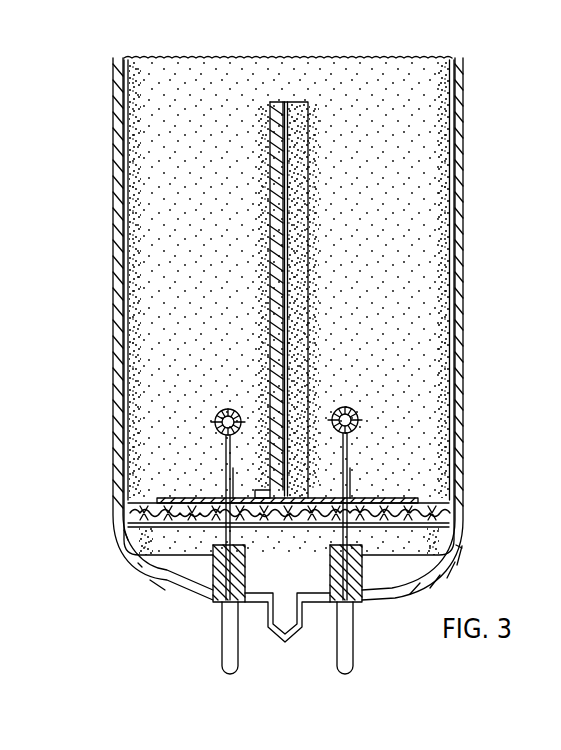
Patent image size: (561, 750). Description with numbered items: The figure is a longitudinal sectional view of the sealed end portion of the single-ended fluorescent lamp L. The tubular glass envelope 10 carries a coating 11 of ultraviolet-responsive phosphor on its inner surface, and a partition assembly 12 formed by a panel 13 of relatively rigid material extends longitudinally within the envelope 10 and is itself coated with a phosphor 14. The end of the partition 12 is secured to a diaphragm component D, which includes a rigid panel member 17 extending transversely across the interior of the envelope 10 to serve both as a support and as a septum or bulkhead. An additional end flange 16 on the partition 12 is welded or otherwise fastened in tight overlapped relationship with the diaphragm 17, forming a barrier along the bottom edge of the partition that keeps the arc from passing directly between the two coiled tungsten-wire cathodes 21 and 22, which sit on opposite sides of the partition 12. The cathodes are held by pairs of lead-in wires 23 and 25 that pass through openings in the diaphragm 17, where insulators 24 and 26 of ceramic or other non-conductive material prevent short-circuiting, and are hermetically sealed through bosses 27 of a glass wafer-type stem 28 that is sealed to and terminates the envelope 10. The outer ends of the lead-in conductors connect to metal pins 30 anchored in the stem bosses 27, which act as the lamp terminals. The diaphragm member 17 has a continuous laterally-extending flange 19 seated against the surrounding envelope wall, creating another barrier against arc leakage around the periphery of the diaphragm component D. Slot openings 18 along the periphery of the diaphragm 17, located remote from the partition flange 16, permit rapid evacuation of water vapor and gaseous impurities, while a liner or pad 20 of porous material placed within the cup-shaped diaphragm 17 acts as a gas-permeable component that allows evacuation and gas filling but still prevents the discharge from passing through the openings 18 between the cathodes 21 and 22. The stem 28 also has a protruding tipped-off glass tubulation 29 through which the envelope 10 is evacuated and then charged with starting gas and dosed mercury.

The tubular glass envelope 10 is at (113, 203).
The phosphor coating 11 is at (158, 78).
The partition assembly 12 is at (300, 126).
The panel 13 is at (282, 100).
The ultraviolet-responsive phosphor 14 is at (287, 186).
The end flange 16 is at (268, 492).
The diaphragm panel member 17 is at (390, 494).
The slot openings 18 is at (130, 497).
The laterally-extending flange 19 is at (124, 518).
The porous liner pad 20 is at (455, 547).
The coiled tungsten-wire cathode 21 is at (221, 411).
The coiled tungsten-wire cathode 22 is at (351, 409).
The lead-in wires 23 is at (225, 480).
The insulator 24 is at (148, 533).
The lead-in wires 25 is at (352, 488).
The insulator 26 is at (370, 521).
The stem bosses 27 is at (246, 583).
The glass wafer-type stem 28 is at (208, 600).
The tipped-off glass tubulation 29 is at (292, 632).
The metal pins 30 is at (230, 674).
The diaphragm component D is at (137, 563).
The fluorescent lamp L is at (53, 323).